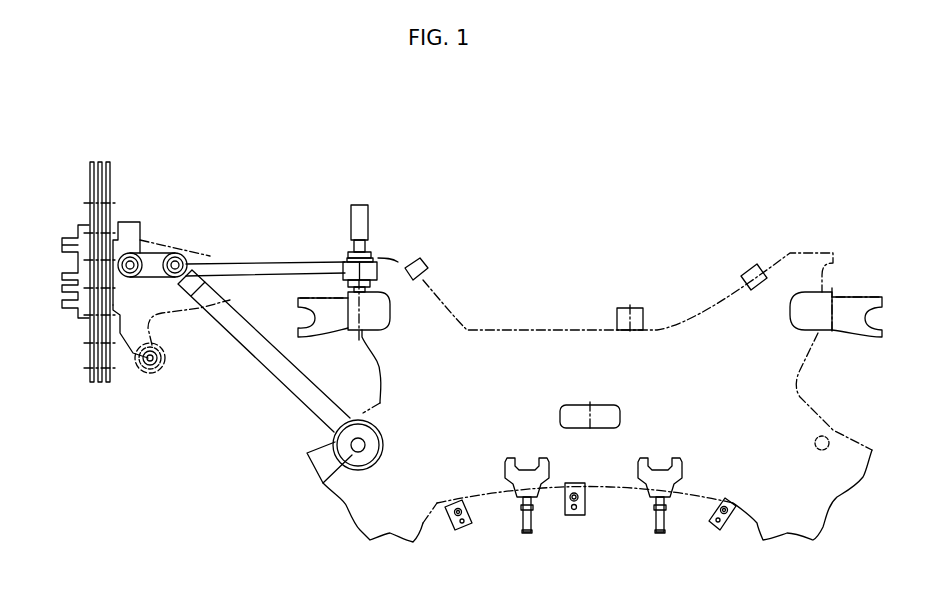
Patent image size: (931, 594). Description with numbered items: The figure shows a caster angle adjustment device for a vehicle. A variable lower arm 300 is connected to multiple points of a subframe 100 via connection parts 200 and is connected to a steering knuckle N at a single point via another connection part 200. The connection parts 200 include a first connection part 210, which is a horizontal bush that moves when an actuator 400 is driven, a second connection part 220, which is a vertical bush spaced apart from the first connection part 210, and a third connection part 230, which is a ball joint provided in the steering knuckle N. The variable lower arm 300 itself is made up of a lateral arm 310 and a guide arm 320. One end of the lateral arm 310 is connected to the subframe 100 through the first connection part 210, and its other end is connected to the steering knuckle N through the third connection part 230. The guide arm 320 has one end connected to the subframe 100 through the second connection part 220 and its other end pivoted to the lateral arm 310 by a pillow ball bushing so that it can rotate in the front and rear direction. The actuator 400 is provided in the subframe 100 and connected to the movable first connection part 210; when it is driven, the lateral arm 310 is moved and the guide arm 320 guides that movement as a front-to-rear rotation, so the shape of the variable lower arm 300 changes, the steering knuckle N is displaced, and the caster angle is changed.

The subframe 100 is at (553, 347).
The connection part 200 is at (331, 372).
The first connection part 210 is at (380, 256).
The second connection part 220 is at (323, 483).
The third connection part 230 is at (137, 252).
The variable lower arm 300 is at (240, 378).
The lateral arm 310 is at (260, 268).
The guide arm 320 is at (287, 387).
The actuator 400 is at (360, 206).
The steering knuckle N is at (140, 302).